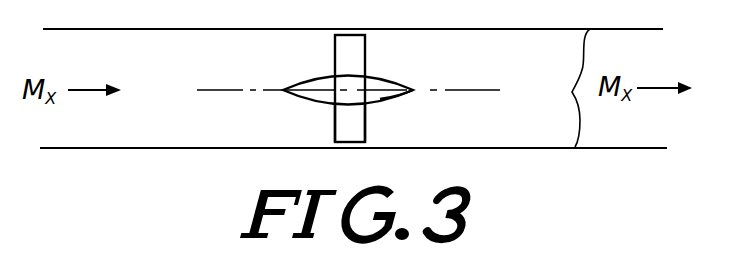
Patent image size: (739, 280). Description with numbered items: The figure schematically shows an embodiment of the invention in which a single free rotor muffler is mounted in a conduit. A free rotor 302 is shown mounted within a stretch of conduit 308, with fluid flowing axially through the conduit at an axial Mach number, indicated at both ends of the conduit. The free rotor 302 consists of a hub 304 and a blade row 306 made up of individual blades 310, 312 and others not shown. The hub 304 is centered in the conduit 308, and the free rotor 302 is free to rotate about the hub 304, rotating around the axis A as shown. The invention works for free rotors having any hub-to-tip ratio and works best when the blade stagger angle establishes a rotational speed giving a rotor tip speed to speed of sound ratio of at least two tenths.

The free rotor 302 is at (401, 70).
The hub 304 is at (402, 96).
The blade row 306 is at (332, 116).
The conduit 308 is at (553, 88).
The blade 310 is at (348, 52).
The blade 312 is at (365, 130).
The axis A is at (226, 91).